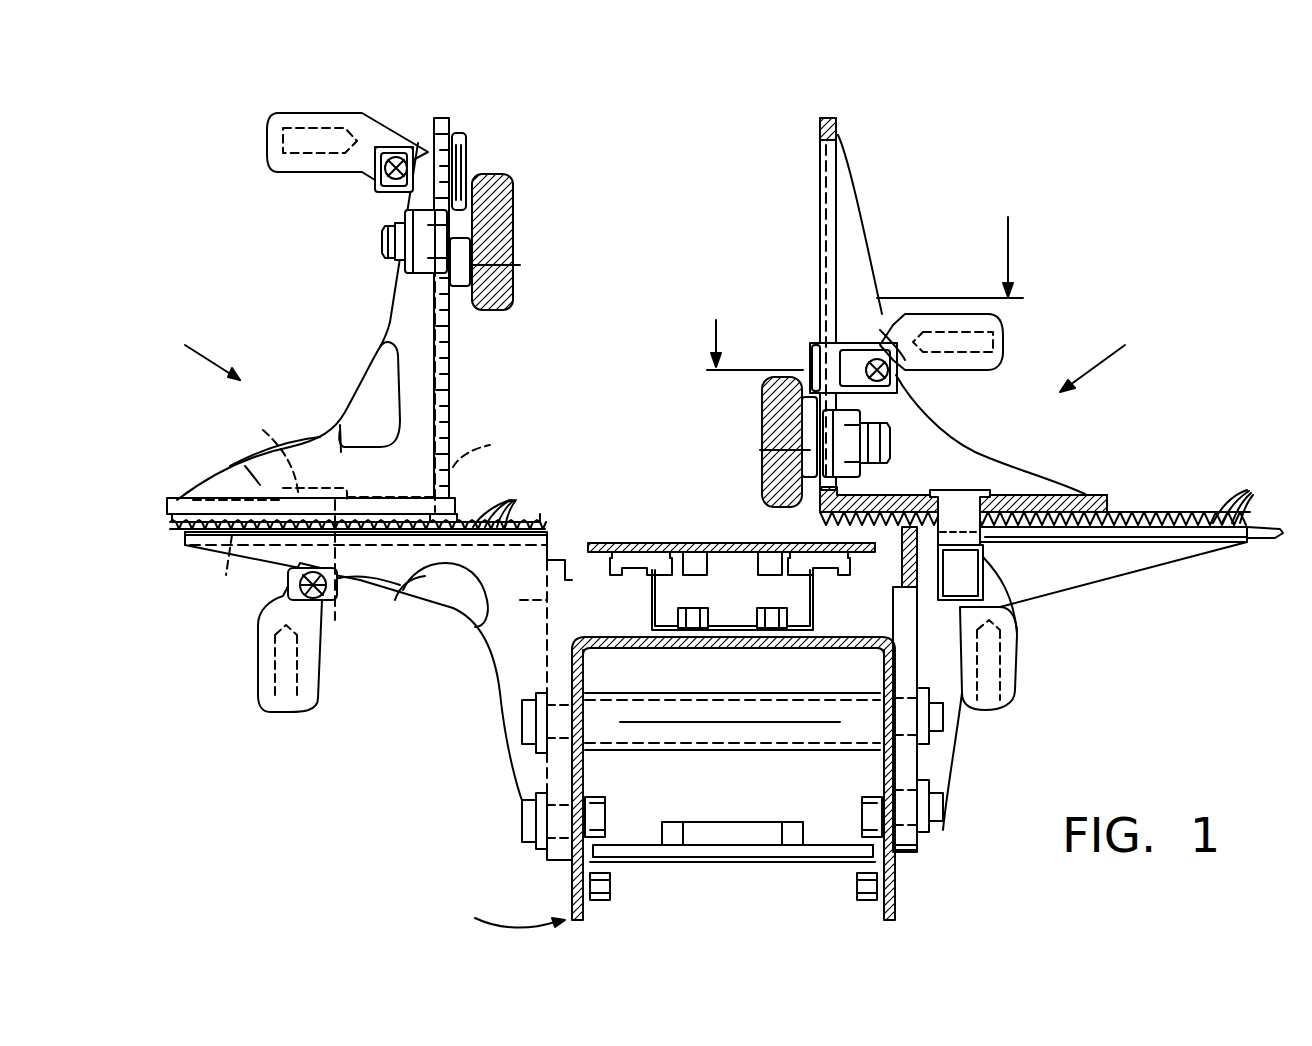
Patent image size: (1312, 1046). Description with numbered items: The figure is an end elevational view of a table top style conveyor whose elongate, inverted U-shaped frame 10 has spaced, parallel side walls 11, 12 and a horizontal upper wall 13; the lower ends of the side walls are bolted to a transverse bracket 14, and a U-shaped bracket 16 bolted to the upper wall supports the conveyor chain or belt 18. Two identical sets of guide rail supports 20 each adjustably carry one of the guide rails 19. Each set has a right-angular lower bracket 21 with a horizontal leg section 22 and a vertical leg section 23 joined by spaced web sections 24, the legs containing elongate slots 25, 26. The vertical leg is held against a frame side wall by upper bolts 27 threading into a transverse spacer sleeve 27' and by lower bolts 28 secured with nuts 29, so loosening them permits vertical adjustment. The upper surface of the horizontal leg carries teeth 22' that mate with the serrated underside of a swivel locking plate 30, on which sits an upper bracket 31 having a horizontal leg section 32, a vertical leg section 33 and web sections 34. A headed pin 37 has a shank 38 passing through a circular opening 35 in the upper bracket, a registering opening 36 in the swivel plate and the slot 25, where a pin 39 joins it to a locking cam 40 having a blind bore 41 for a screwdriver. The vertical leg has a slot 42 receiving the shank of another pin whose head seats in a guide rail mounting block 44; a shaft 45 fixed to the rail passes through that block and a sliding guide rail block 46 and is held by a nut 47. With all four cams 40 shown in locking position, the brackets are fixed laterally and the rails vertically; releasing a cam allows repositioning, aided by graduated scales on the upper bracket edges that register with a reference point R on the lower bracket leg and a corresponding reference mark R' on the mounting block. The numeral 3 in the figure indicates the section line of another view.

The frame 10 is at (501, 921).
The side wall 11 is at (585, 768).
The side wall 12 is at (880, 768).
The upper wall 13 is at (618, 640).
The bracket 14 is at (690, 862).
The U-shaped bracket 16 is at (814, 580).
The conveyor chain or belt 18 is at (665, 543).
The guide rail 19 is at (510, 220).
The guide rail support set 20 is at (654, 351).
The lower bracket 21 is at (490, 655).
The leg section 22 is at (710, 671).
The teeth 22' is at (877, 496).
The leg section 23 is at (550, 853).
The web section 24 is at (465, 595).
The slot 25 is at (227, 575).
The slot 26 is at (550, 600).
The bolt 27 is at (730, 724).
The spacer sleeve 27' is at (732, 703).
The bolt 28 is at (520, 828).
The nut 29 is at (607, 838).
The swivel locking plate 30 is at (172, 522).
The upper bracket 31 is at (310, 437).
The leg section 32 is at (180, 498).
The leg section 33 is at (444, 118).
The web section 34 is at (363, 417).
The circular opening 35 is at (248, 478).
The circular opening 36 is at (950, 490).
The headed pin 37 is at (292, 460).
The shank 38 is at (850, 360).
The pin 39 is at (320, 598).
The locking cam 40 is at (268, 168).
The blind bore 41 is at (278, 115).
The slot 42 is at (820, 155).
The guide rail mounting block 44 is at (458, 285).
The shaft 45 is at (382, 244).
The guide rail block 46 is at (893, 430).
The nut 47 is at (405, 235).
The reference point R is at (640, 363).
The radius R' is at (400, 579).
The section line 3 is at (865, 292).